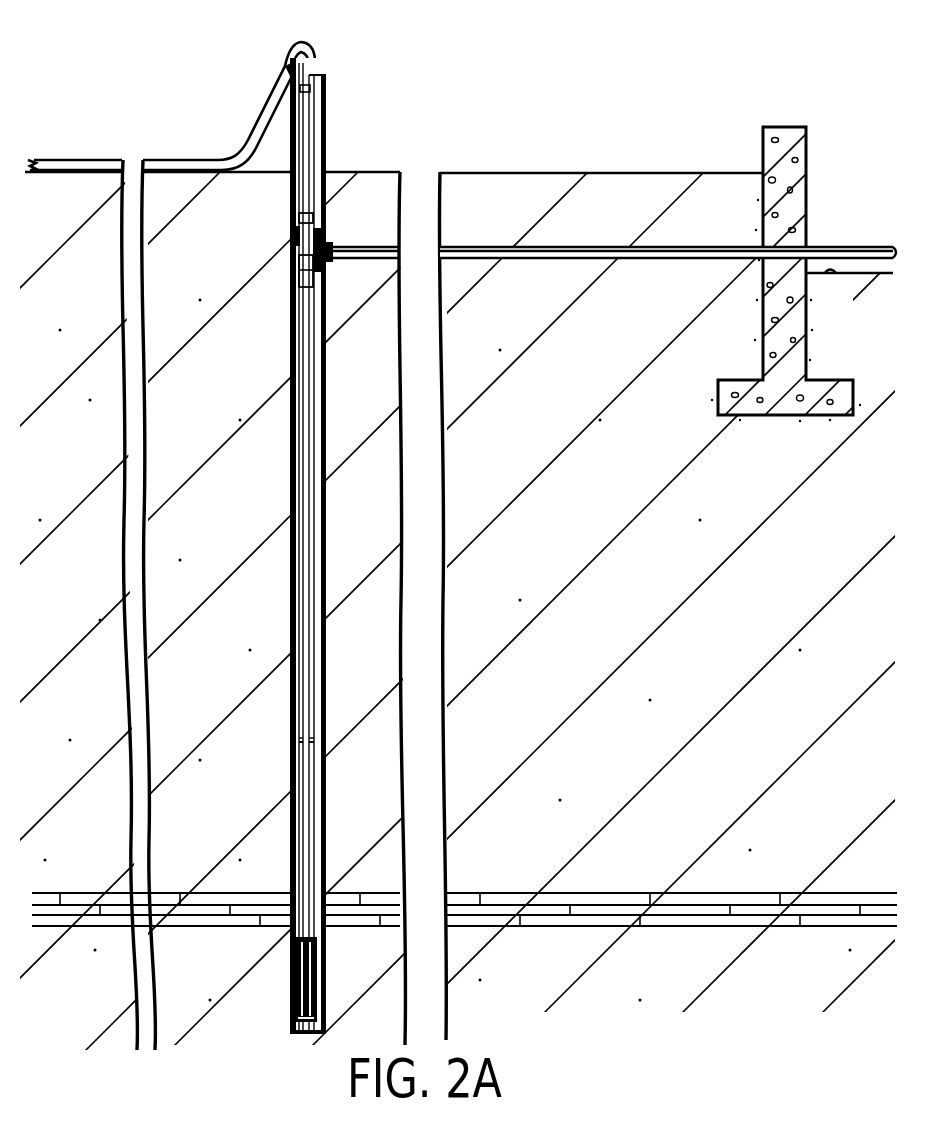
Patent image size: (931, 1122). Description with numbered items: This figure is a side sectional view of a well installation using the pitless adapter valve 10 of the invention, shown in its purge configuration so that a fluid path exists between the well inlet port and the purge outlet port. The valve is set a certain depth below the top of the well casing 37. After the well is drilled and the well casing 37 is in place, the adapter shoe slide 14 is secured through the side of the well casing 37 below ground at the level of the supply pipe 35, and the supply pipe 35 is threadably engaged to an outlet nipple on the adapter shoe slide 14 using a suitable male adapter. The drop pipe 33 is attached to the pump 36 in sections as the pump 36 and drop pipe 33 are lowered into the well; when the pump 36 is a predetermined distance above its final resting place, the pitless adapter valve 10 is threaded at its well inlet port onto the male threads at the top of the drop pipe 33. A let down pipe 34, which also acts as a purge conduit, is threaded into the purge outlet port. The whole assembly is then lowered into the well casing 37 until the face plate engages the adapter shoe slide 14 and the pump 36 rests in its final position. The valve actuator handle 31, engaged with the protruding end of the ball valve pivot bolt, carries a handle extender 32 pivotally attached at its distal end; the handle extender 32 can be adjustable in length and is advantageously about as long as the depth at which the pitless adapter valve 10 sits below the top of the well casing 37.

The pitless adapter valve 10 is at (290, 236).
The adapter shoe slide 14 is at (363, 232).
The valve actuator handle 31 is at (290, 258).
The handle extender 32 is at (289, 62).
The drop pipe 33 is at (291, 470).
The let down pipe 34 is at (308, 120).
The supply pipe 35 is at (585, 238).
The pump 36 is at (292, 972).
The well casing 37 is at (323, 792).